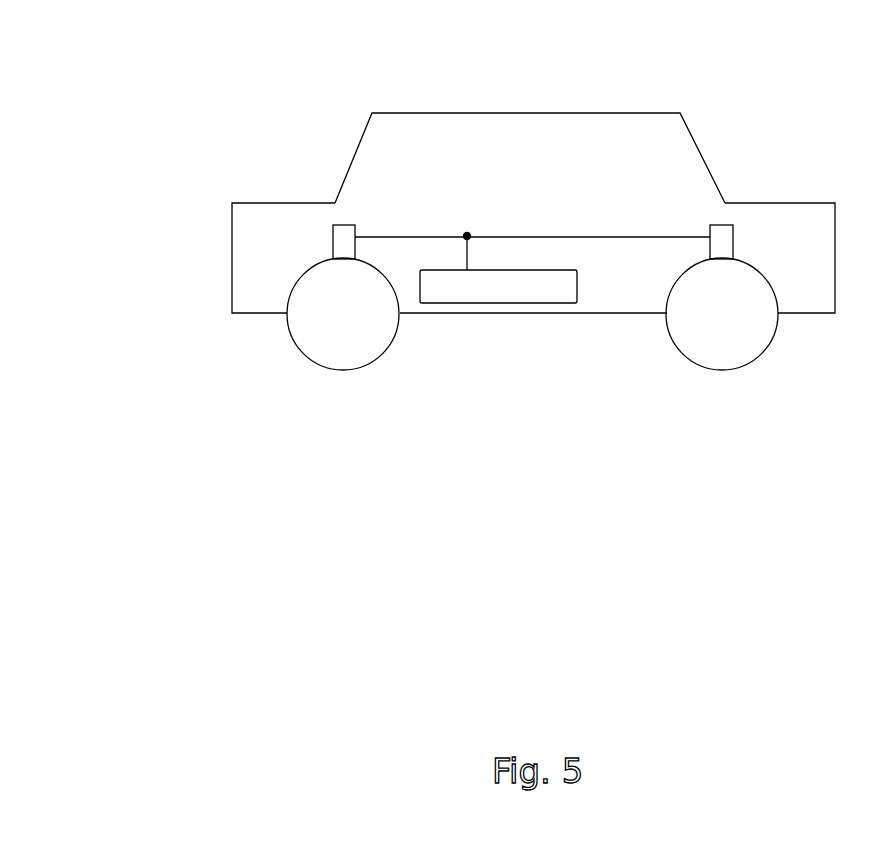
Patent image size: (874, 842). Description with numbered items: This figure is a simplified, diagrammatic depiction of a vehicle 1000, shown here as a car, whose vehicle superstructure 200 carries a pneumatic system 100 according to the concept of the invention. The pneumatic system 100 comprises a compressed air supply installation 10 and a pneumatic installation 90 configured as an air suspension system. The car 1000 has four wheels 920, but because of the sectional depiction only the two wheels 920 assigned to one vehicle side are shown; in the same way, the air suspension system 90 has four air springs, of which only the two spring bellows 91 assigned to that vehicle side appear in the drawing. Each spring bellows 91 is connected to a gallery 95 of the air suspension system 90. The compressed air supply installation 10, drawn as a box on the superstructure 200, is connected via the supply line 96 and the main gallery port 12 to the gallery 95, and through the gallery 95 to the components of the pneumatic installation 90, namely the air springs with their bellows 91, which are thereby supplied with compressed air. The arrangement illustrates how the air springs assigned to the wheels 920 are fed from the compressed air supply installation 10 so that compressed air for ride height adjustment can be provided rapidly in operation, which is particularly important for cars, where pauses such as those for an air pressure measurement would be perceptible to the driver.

The vehicle 1000 is at (733, 50).
The pneumatic system 100 is at (440, 129).
The vehicle superstructure 200 is at (637, 309).
The pneumatic installation 90 is at (272, 292).
The wheels 920 is at (341, 390).
The spring bellows 91 is at (340, 219).
The gallery 95 is at (655, 235).
The main gallery port 12 is at (467, 232).
The supply line 96 is at (468, 259).
The compressed air supply installation 10 is at (427, 303).